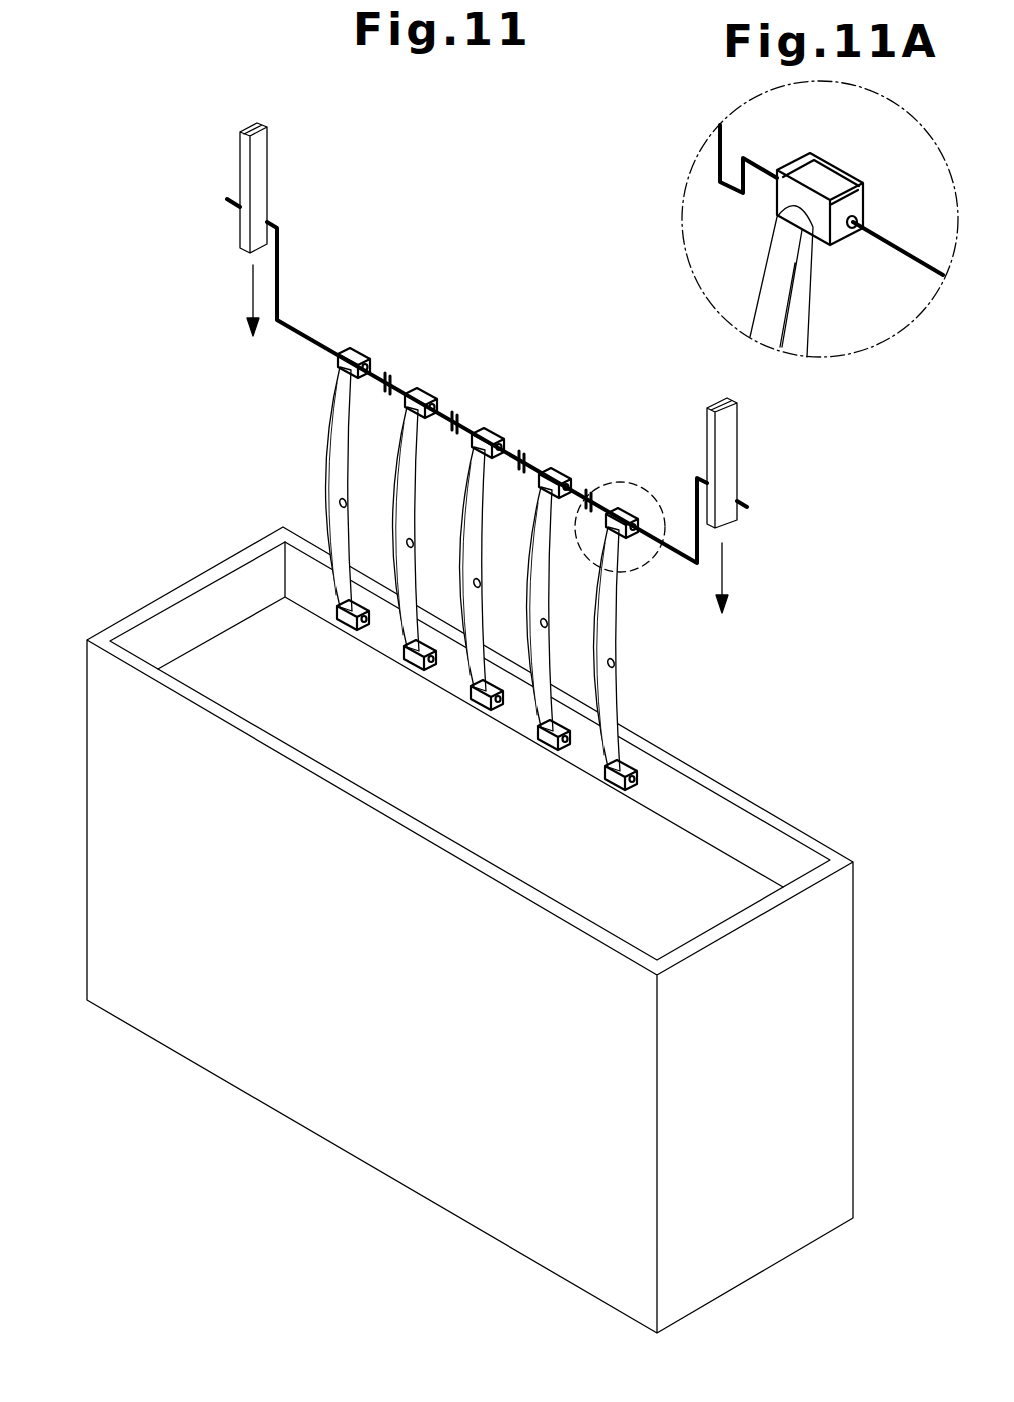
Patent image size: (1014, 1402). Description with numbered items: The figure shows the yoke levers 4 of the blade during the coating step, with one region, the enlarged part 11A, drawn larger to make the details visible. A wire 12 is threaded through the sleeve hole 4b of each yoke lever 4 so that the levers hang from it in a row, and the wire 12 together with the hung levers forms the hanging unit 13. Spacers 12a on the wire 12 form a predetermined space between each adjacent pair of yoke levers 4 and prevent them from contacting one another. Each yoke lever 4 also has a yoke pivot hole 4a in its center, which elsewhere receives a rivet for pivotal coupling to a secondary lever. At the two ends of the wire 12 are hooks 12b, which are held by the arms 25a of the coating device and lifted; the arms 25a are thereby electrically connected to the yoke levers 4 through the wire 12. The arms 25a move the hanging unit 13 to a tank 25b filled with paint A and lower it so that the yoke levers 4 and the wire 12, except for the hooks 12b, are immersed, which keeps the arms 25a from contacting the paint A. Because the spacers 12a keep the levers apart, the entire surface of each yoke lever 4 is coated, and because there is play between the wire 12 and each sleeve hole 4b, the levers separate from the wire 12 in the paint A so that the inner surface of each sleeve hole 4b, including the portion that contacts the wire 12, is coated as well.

In FIG. 11, the yoke lever 4 is at (333, 404).
In FIG. 11A, the yoke lever 4 is at (772, 273).
In FIG. 11, the yoke pivot hole 4a is at (340, 504).
In FIG. 11, the sleeve hole 4b is at (368, 378).
In FIG. 11A, the sleeve hole 4b is at (852, 230).
In FIG. 11, the enlarged part 11A is at (630, 482).
In FIG. 11, the wire 12 is at (487, 381).
In FIG. 11A, the wire 12 is at (903, 253).
In FIG. 11, the spacer 12a is at (388, 392).
In FIG. 11A, the spacer 12a is at (723, 138).
In FIG. 11, the hook 12b is at (278, 252).
In FIG. 11, the hanging unit 13 is at (483, 526).
In FIG. 11, the arm 25a is at (240, 172).
In FIG. 11, the tank 25b is at (328, 1130).
In FIG. 11, the paint A is at (744, 881).